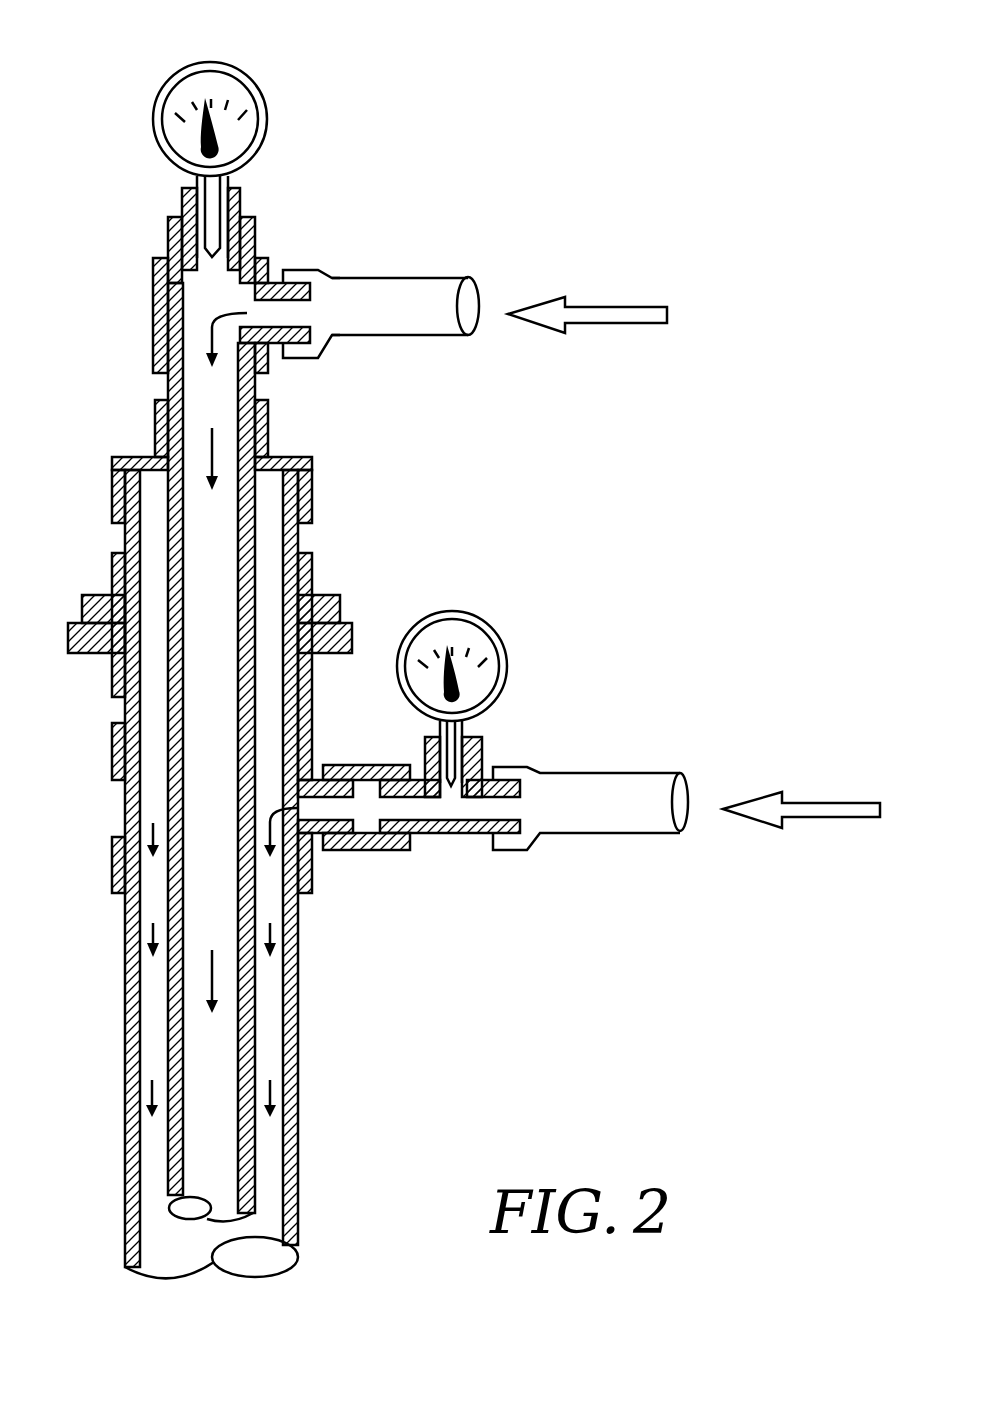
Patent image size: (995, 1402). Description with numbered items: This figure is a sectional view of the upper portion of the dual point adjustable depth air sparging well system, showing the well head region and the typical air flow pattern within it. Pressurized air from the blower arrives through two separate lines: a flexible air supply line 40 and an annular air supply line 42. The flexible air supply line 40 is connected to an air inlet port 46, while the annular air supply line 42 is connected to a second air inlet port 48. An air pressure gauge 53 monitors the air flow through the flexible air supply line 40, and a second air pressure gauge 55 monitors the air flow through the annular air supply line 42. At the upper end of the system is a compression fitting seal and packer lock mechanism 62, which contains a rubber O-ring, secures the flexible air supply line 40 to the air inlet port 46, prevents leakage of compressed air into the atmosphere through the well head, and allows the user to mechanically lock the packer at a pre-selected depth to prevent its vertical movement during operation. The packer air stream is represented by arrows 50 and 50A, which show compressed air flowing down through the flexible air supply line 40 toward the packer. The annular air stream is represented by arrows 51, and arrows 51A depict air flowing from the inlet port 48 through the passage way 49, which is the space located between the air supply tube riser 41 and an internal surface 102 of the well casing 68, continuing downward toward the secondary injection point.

The air pressure gauge 53 is at (262, 85).
The air inlet port 46 is at (312, 273).
The flexible air supply line 40 is at (408, 278).
The arrows 50 is at (610, 310).
The compression fitting seal and packer lock mechanism 62 is at (262, 408).
The arrows 50A is at (207, 442).
The air pressure gauge 55 is at (493, 617).
The air inlet port 48 is at (338, 767).
The annular air supply line 42 is at (623, 773).
The arrows 51 is at (830, 805).
The arrows 51A is at (152, 925).
The passage way 49 is at (270, 1010).
The well casing 68 is at (298, 1103).
The air supply tube riser 41 is at (168, 1173).
The internal surface 102 is at (280, 1197).